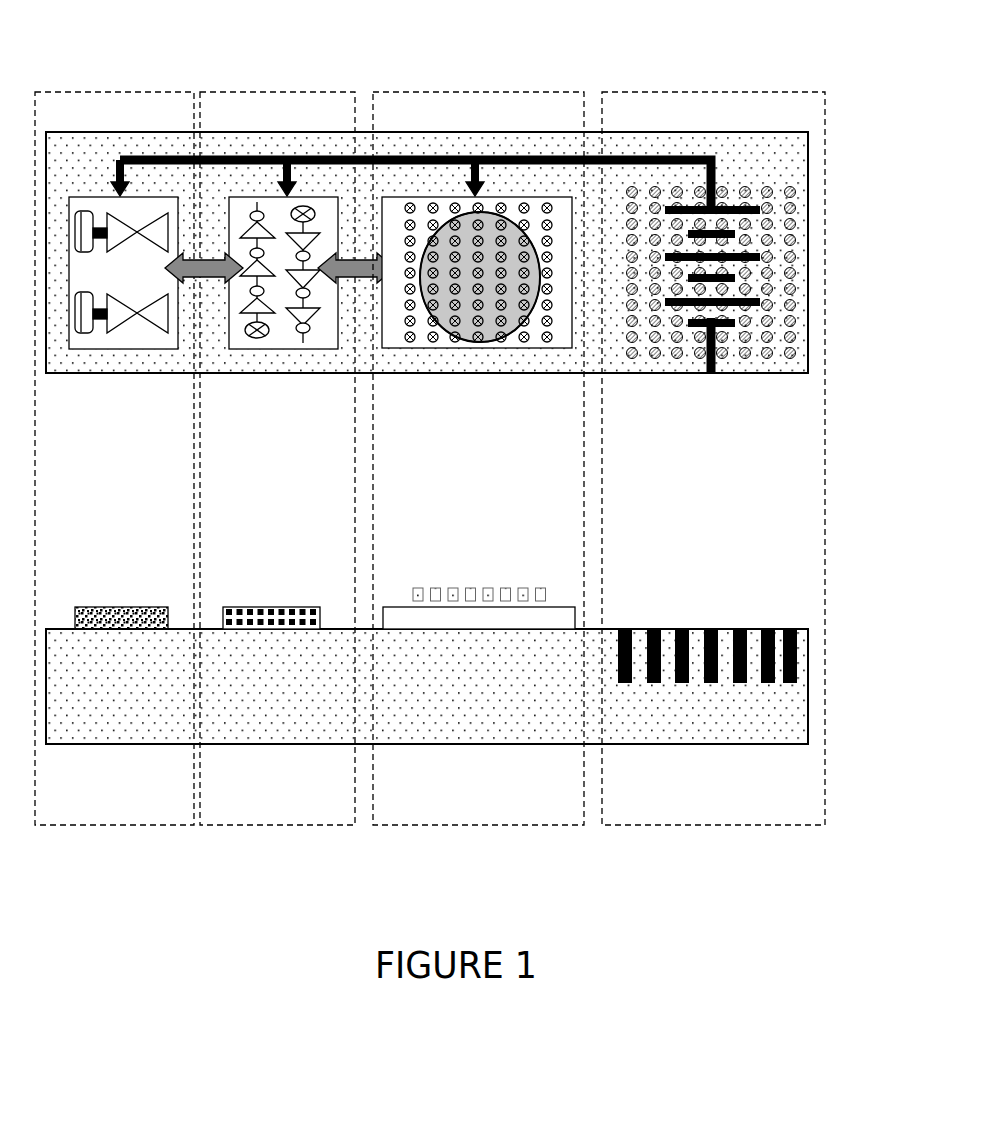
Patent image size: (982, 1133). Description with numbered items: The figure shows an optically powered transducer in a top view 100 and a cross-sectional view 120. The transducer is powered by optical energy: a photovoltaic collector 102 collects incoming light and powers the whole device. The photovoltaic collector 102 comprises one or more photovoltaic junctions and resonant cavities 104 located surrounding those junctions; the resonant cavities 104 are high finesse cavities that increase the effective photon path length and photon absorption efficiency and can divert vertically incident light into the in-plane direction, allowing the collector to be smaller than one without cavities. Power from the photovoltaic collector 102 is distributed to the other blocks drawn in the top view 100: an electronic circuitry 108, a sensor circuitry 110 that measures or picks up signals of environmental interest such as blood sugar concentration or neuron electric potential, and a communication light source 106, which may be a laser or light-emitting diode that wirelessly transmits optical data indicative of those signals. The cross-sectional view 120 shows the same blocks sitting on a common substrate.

The top view 100 is at (889, 331).
The photovoltaic collector 102 is at (722, 115).
The resonant cavities 104 is at (720, 373).
The communication light source 106 is at (487, 108).
The electronic circuitry 108 is at (282, 103).
The sensor circuitry 110 is at (122, 103).
The cross-sectional view 120 is at (895, 726).